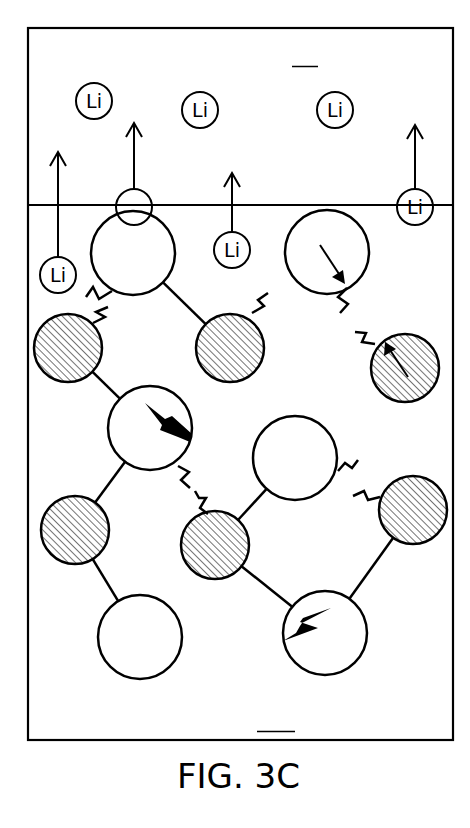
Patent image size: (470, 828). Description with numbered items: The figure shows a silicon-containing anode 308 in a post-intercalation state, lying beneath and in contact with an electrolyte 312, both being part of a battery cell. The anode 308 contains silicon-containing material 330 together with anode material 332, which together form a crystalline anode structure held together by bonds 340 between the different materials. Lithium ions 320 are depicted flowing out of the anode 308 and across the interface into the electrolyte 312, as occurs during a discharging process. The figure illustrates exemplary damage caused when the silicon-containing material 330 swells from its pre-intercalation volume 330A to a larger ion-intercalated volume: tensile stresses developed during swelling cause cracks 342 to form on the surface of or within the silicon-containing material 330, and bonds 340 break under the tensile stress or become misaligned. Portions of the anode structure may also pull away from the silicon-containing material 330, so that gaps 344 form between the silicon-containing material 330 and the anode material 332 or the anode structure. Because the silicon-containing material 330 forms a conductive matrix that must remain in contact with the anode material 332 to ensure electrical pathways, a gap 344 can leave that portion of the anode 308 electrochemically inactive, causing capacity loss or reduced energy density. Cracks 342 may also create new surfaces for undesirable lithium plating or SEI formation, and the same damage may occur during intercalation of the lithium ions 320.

The electrolyte 312 is at (240, 55).
The silicon-containing anode 308 is at (238, 720).
The lithium ions 320 is at (152, 198).
The silicon-containing material 330 is at (118, 675).
The pre-intercalation volume 330A is at (357, 665).
The anode material 332 is at (264, 353).
The bonds 340 is at (182, 488).
The cracks 342 is at (277, 638).
The gaps 344 is at (366, 281).